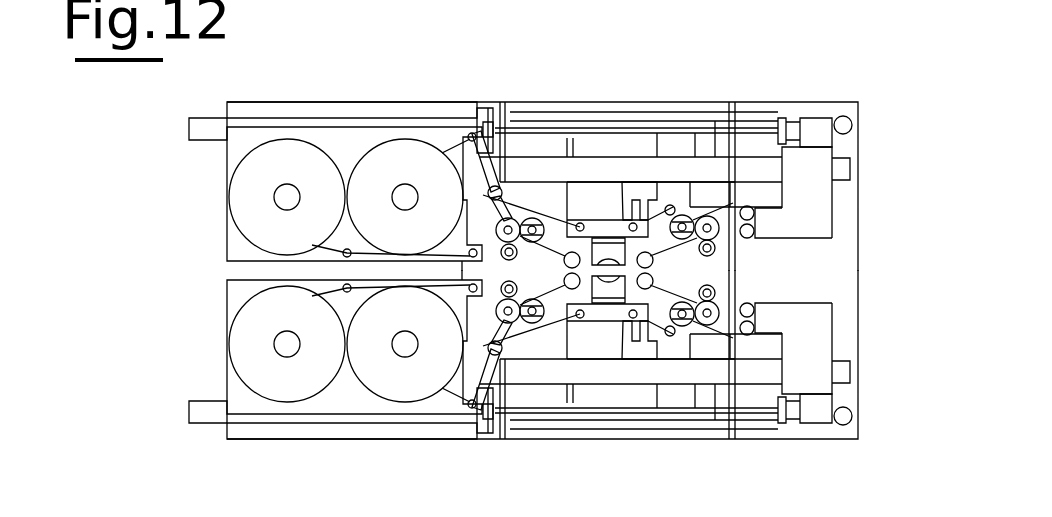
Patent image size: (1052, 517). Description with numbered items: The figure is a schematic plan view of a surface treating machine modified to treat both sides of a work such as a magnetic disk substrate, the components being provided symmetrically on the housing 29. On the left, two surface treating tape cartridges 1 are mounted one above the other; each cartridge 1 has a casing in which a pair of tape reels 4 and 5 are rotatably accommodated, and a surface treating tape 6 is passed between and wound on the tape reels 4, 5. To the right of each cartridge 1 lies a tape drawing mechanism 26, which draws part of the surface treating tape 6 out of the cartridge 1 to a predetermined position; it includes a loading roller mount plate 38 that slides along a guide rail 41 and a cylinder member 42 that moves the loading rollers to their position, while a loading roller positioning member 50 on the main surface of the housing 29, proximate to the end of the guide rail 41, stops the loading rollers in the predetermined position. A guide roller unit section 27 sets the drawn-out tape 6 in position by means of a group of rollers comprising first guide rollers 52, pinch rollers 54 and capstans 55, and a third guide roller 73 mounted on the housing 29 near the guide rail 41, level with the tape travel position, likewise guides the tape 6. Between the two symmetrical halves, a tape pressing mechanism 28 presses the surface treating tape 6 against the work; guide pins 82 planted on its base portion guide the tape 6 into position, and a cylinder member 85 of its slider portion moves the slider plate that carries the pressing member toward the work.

The surface treating tape cartridge 1 is at (232, 300).
The tape reel 4 is at (285, 388).
The tape reel 5 is at (402, 388).
The surface treating tape 6 is at (472, 410).
The tape drawing mechanism 26 is at (820, 316).
The guide roller unit section 27 is at (714, 396).
The tape pressing mechanism 28 is at (584, 318).
The housing 29 is at (242, 106).
The loading roller mount plate 38 is at (820, 375).
The guide rail 41 is at (762, 370).
The cylinder member 42 is at (206, 420).
The loading roller positioning member 50 is at (843, 426).
The first guide rollers 52 is at (608, 270).
The pinch rollers 54 is at (708, 322).
The capstans 55 is at (686, 322).
The third guide roller 73 is at (490, 430).
The guide pins 82 is at (605, 395).
The cylinder member 85 is at (645, 398).